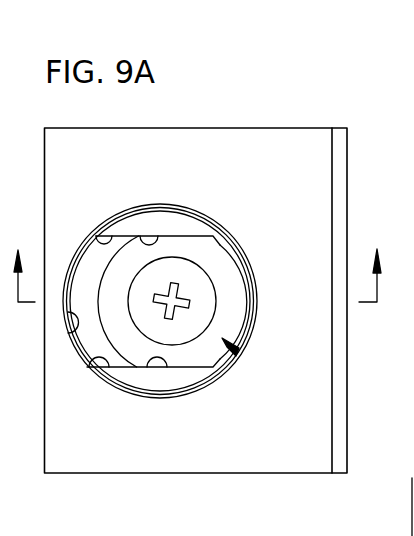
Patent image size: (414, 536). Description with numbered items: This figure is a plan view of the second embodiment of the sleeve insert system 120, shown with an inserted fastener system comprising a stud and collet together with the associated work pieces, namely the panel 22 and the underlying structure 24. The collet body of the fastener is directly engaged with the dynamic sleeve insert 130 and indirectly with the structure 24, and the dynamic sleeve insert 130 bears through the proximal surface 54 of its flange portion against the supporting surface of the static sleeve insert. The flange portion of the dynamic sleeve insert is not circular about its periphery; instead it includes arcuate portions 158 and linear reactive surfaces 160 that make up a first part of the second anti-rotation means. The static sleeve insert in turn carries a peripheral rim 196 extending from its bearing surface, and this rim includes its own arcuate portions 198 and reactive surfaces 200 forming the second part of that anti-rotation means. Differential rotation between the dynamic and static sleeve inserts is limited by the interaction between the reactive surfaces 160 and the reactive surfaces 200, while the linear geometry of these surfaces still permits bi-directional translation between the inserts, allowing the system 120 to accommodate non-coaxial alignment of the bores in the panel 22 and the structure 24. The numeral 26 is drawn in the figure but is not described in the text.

The system 120 is at (82, 110).
The panel 22 is at (76, 462).
The structure 24 is at (340, 357).
The screw 26 is at (193, 276).
The proximal surface 54 is at (413, 521).
The dynamic sleeve insert 130 is at (238, 355).
The arcuate portions 158 is at (106, 268).
The reactive surfaces 160 is at (143, 237).
The peripheral rim 196 is at (158, 219).
The arcuate portions 198 is at (70, 328).
The reactive surfaces 200 is at (97, 238).